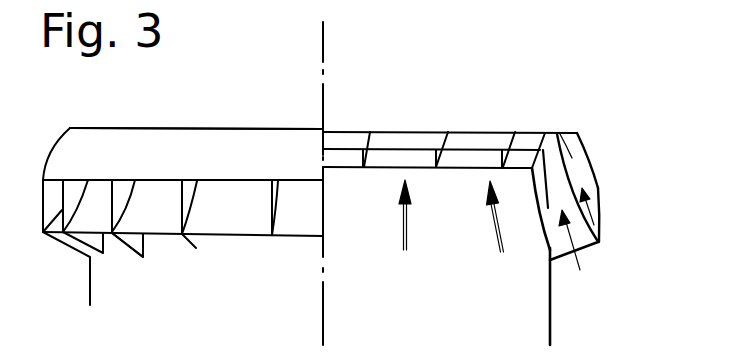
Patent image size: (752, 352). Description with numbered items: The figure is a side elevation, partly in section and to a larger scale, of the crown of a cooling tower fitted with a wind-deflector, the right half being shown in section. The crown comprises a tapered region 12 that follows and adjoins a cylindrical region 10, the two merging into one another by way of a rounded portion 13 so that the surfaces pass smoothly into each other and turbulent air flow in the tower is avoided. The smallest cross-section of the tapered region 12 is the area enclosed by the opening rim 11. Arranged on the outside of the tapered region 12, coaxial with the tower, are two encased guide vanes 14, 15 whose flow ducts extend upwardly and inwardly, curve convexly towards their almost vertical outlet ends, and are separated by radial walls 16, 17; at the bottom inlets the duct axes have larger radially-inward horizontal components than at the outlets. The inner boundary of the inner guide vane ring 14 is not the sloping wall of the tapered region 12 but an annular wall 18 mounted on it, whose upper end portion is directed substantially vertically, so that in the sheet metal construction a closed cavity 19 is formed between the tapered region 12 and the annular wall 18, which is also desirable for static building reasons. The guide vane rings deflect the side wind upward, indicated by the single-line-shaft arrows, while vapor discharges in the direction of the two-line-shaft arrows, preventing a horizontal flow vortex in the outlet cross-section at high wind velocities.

The cylindrical region 10 is at (552, 308).
The opening rim 11 is at (483, 131).
The tapered region 12 is at (535, 202).
The rounded portion 13 is at (550, 250).
The inner guide vane ring 14 is at (233, 200).
The outer guide vane ring 15 is at (192, 155).
The radial wall 16 is at (198, 250).
The radial wall 17 is at (185, 200).
The annular wall 18 is at (543, 178).
The cavity 19 is at (542, 132).